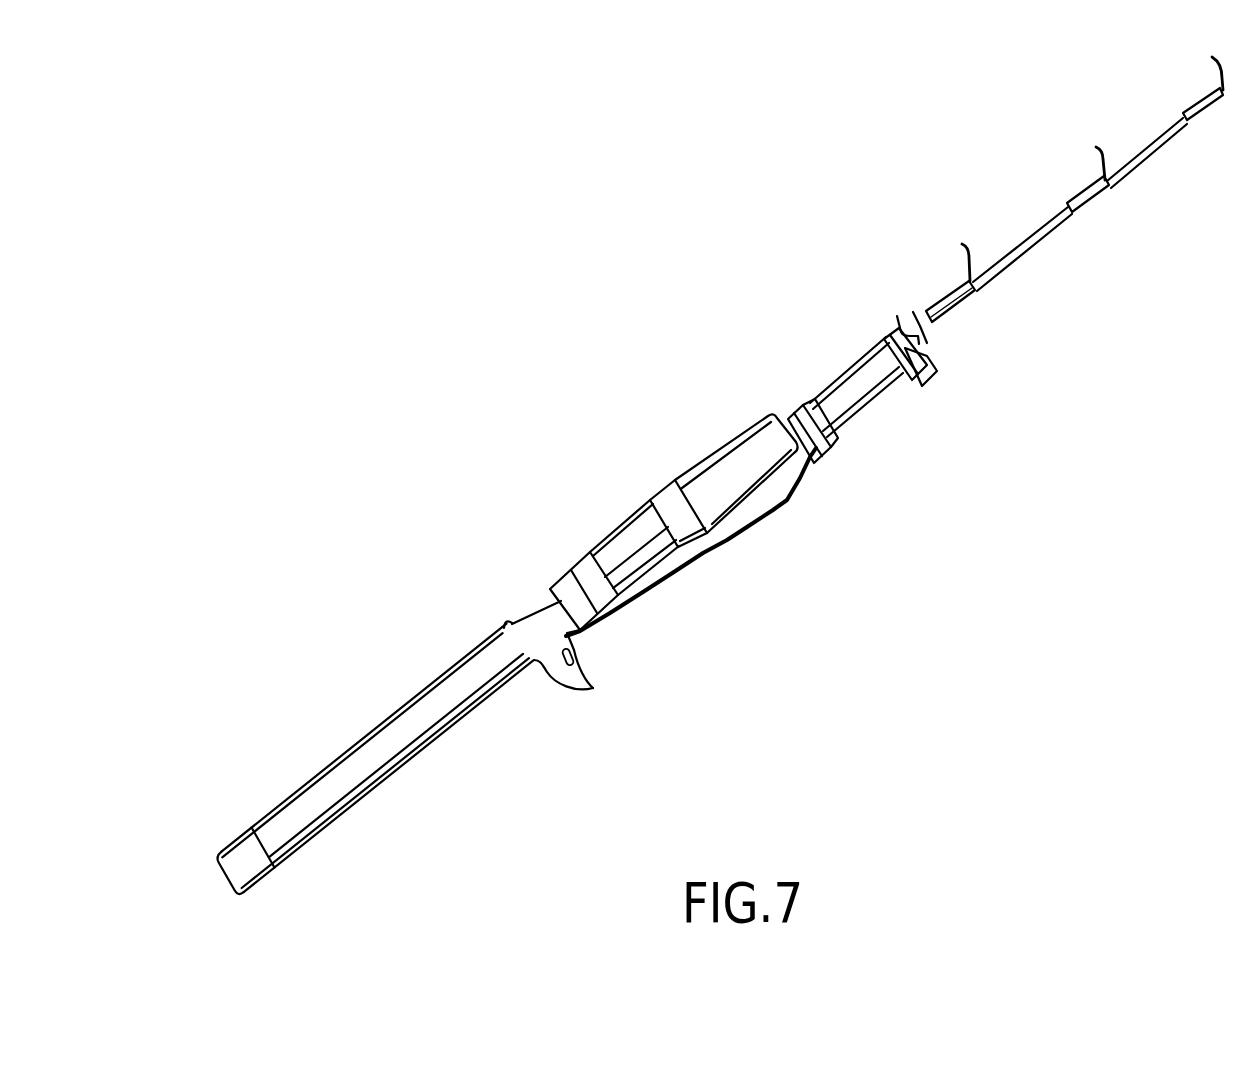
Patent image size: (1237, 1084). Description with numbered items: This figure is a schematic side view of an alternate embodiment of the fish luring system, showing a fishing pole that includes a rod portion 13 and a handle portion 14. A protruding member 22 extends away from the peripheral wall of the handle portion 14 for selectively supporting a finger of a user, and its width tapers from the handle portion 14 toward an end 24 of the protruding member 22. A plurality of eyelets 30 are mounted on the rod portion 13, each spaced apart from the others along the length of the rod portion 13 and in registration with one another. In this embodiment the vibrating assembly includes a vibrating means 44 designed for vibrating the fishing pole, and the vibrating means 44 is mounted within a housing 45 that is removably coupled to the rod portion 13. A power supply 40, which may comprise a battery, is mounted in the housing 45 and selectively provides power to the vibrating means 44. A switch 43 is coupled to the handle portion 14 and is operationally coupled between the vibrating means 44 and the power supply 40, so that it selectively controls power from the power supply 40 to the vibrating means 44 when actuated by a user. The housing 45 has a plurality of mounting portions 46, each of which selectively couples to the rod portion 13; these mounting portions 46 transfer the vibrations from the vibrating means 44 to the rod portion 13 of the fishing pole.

The rod portion 13 is at (938, 297).
The handle portion 14 is at (343, 783).
The protruding member 22 is at (545, 672).
The end of the protruding member 24 is at (595, 688).
The eyelets 30 is at (973, 280).
The power supply 40 is at (893, 390).
The switch 43 is at (576, 656).
The vibrating means 44 is at (838, 433).
The housing 45 is at (930, 362).
The mounting portions 46 is at (885, 338).